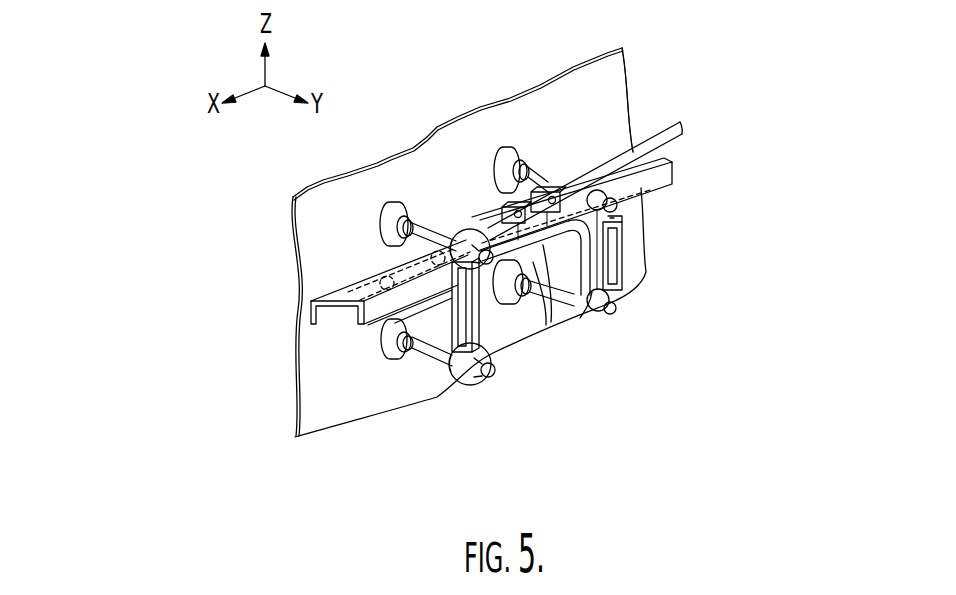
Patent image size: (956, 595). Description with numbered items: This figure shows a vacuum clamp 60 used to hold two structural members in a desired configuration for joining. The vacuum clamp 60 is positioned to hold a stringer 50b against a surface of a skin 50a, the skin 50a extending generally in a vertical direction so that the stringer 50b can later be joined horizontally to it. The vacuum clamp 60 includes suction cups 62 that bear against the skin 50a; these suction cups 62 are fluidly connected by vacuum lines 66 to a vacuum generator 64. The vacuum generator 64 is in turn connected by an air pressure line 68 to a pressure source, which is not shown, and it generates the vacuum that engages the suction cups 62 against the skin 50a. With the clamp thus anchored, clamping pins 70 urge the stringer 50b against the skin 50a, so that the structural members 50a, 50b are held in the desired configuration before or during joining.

The skin 50a is at (417, 152).
The stringer 50b is at (390, 270).
The vacuum clamp 60 is at (598, 140).
The suction cups 62 is at (509, 150).
The vacuum generator 64 is at (546, 187).
The vacuum lines 66 is at (575, 302).
The air pressure line 68 is at (652, 134).
The clamping pins 70 is at (433, 310).